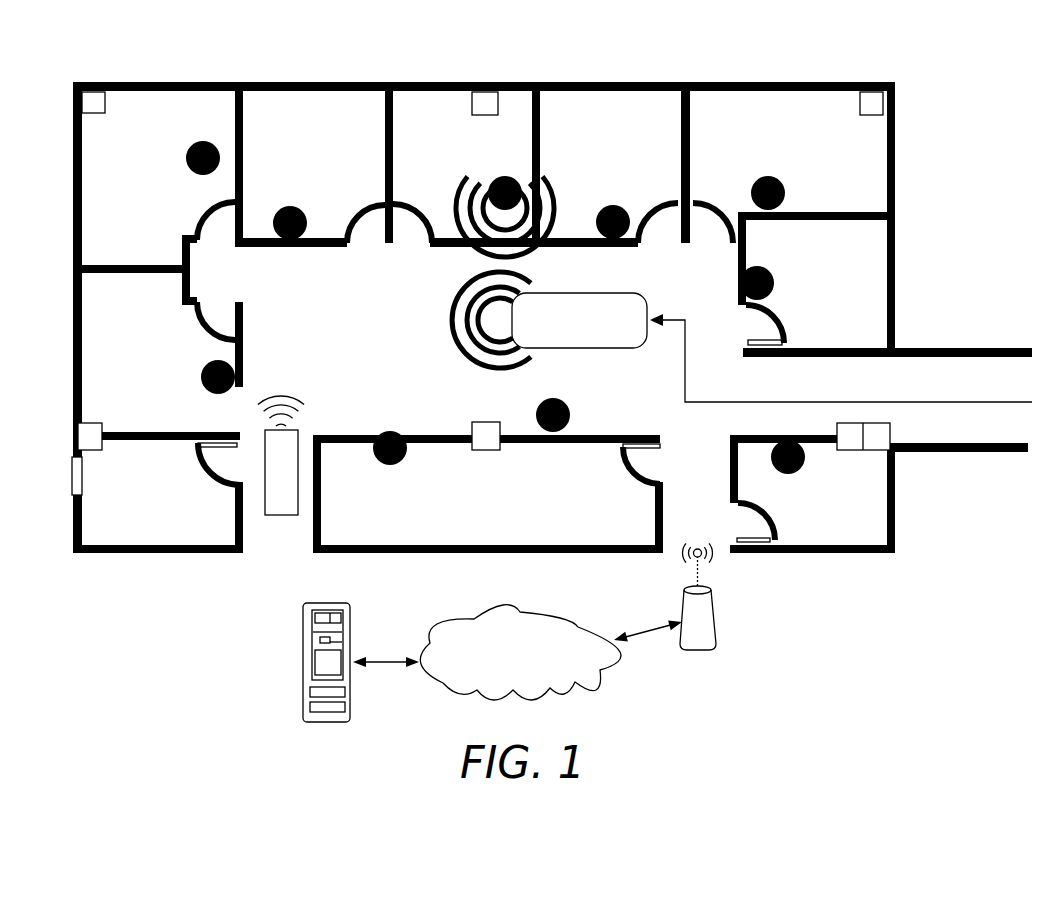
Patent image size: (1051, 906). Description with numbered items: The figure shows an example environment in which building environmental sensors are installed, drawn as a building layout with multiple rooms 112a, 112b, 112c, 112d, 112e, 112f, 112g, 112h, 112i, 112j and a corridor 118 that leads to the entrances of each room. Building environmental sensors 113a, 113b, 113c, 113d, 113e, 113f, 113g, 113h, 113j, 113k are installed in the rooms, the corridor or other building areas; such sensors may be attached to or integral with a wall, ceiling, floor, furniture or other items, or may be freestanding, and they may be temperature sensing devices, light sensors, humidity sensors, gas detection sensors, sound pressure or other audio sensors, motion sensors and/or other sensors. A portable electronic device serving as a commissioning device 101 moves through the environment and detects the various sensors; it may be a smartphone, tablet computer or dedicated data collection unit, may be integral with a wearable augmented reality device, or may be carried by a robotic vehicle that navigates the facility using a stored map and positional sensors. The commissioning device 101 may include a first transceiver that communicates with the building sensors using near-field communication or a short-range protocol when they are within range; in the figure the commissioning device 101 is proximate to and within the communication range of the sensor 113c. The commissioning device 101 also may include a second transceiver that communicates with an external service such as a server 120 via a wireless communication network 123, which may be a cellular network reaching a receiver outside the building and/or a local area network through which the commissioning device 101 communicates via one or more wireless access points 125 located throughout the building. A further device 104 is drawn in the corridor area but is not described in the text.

The commissioning device 101 is at (595, 352).
The hub device 104 is at (282, 516).
The room 112a is at (175, 81).
The room 112b is at (318, 81).
The room 112c is at (450, 81).
The room 112d is at (617, 81).
The room 112e is at (775, 81).
The room 112f is at (897, 277).
The room 112g is at (896, 503).
The room 112h is at (407, 555).
The room 112i is at (73, 514).
The room 112j is at (73, 342).
The building environmental sensor 113a is at (186, 160).
The building environmental sensor 113b is at (291, 205).
The building environmental sensor 113c is at (499, 176).
The building environmental sensor 113d is at (613, 205).
The building environmental sensor 113e is at (770, 176).
The building environmental sensor 113f is at (775, 280).
The building environmental sensor 113g is at (788, 477).
The building environmental sensor 113h is at (390, 466).
The building environmental sensor 113j is at (200, 377).
The building environmental sensor 113k is at (536, 409).
The corridor 118 is at (362, 337).
The server 120 is at (303, 665).
The wireless communication network 123 is at (503, 605).
The wireless access point 125 is at (716, 617).